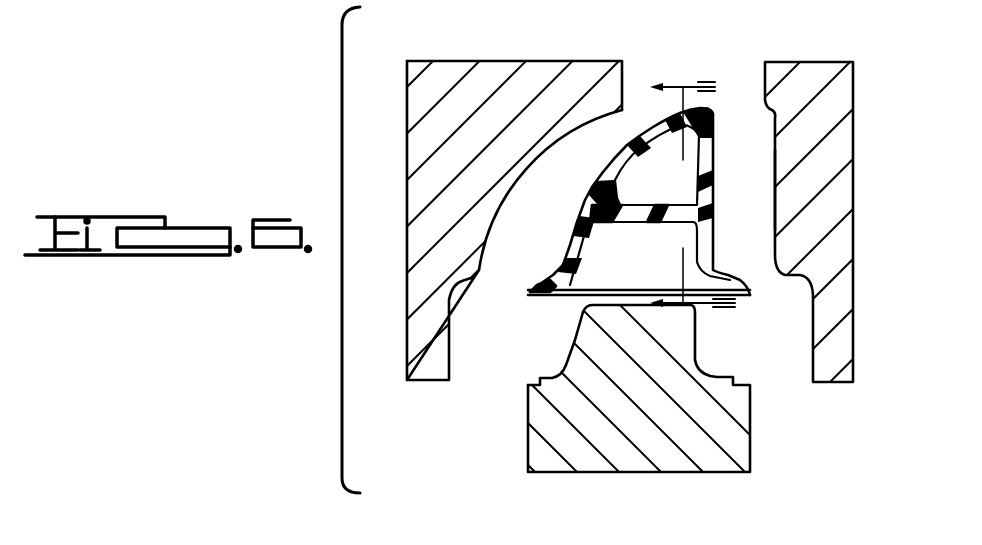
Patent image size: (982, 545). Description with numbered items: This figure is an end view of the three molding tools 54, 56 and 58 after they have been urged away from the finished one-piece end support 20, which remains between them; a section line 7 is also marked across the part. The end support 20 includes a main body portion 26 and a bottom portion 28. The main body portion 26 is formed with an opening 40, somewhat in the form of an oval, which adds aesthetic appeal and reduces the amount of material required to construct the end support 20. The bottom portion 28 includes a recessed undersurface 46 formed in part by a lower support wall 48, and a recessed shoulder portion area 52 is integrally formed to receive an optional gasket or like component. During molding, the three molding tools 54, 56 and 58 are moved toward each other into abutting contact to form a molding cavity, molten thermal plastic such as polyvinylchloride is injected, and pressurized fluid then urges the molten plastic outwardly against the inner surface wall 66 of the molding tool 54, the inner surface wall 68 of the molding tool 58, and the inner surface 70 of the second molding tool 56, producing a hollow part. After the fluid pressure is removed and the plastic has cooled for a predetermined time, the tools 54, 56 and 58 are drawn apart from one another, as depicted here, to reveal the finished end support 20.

The end support 20 is at (622, 173).
The main body portion 26 is at (611, 150).
The bottom portion 28 is at (539, 283).
The opening 40 is at (672, 186).
The recessed undersurface 46 is at (580, 258).
The lower support wall 48 is at (655, 220).
The recessed shoulder portion area 52 is at (547, 298).
The molding tool 54 is at (413, 193).
The second molding tool 56 is at (795, 226).
The molding tool 58 is at (577, 413).
The inner surface wall 66 is at (548, 150).
The inner surface wall 68 is at (622, 308).
The inner surface 70 is at (775, 190).
The section line 7- 7 is at (740, 347).